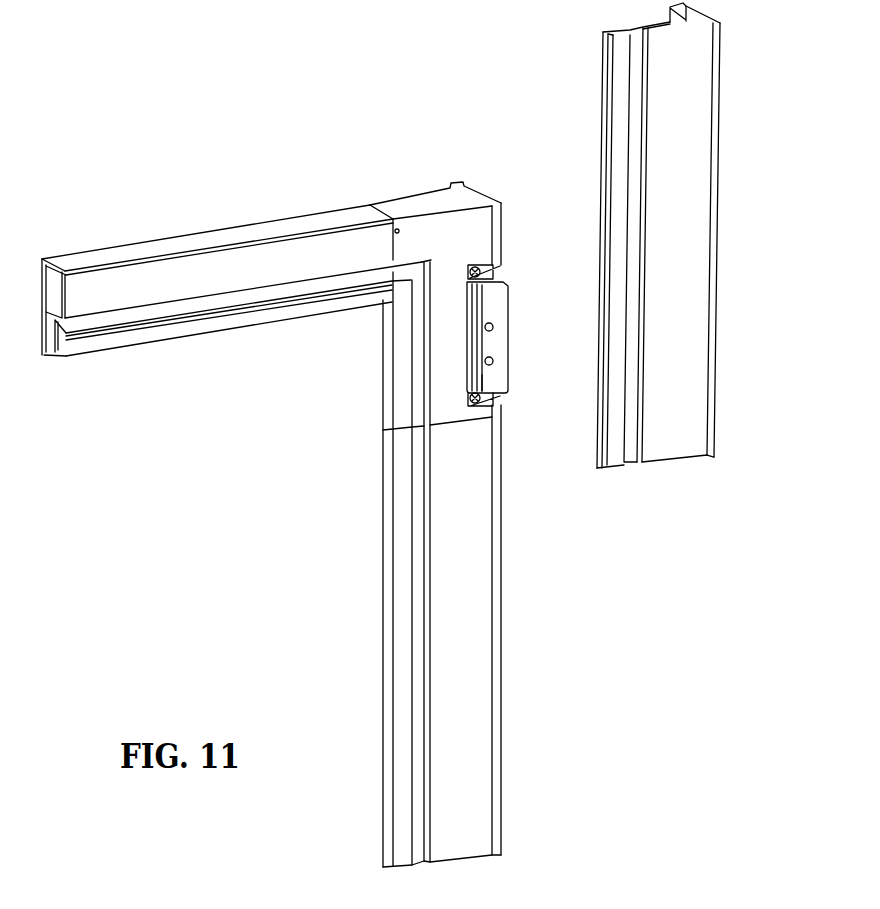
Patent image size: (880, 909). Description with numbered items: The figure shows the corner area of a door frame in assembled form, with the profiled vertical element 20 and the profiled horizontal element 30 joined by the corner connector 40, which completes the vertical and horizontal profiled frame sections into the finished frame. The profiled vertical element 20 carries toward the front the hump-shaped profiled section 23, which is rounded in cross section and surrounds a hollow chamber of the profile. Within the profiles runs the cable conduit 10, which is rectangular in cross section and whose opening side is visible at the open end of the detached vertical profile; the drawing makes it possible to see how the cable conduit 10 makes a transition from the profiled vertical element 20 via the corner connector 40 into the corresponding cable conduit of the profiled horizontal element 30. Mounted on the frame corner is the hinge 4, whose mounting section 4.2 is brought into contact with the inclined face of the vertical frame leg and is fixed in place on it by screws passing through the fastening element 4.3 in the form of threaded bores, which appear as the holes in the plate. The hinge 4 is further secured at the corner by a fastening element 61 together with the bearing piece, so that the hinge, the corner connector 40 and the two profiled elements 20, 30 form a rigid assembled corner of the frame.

The profiled horizontal element 30 is at (200, 230).
The corner connector 40 is at (420, 187).
The profiled vertical element 20 is at (502, 713).
The cable conduit 10 is at (77, 328).
The profiled section 23 is at (672, 8).
The hinge 4 is at (509, 340).
The fastening element 4.3 is at (492, 325).
The mounting section 4.2 is at (490, 378).
The fastening element 61 is at (481, 268).